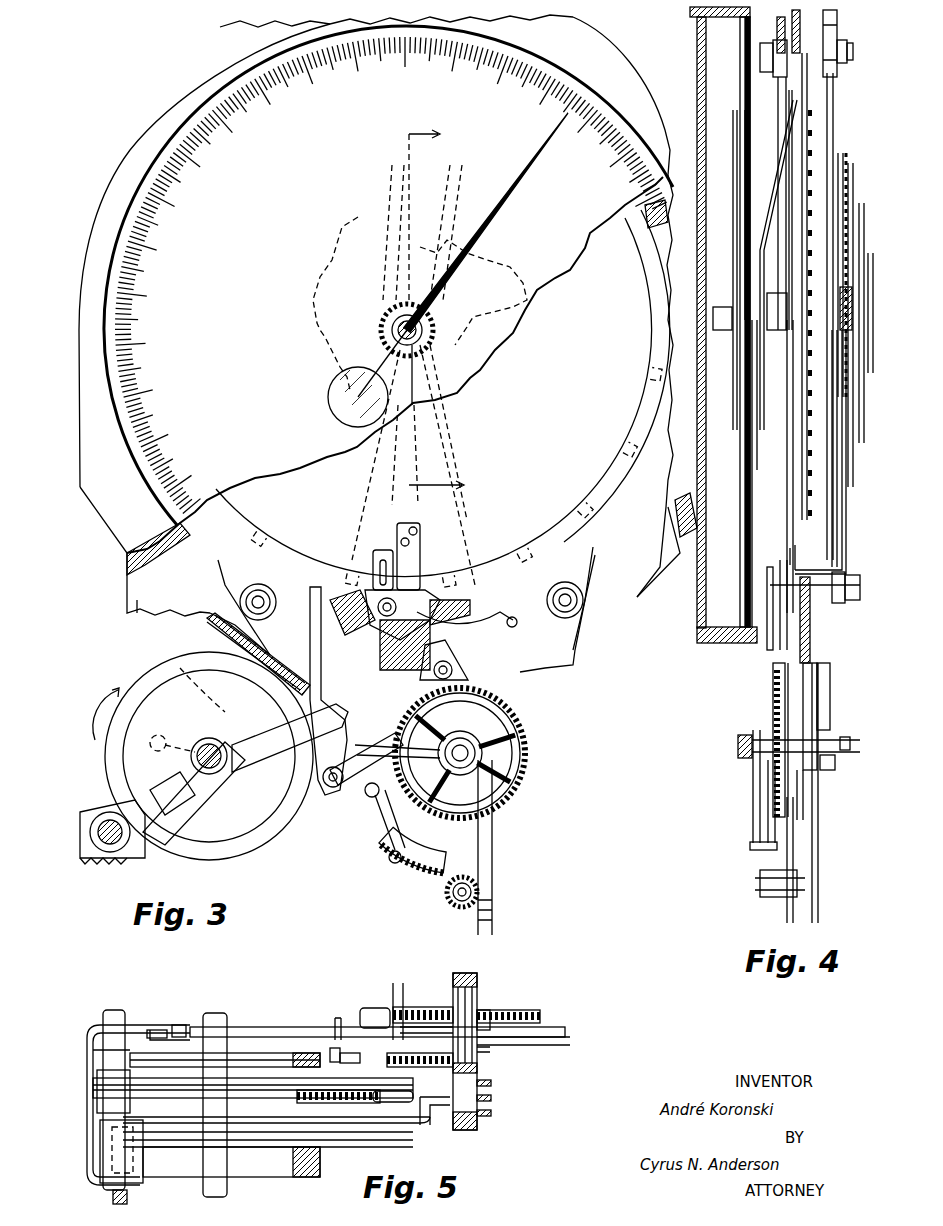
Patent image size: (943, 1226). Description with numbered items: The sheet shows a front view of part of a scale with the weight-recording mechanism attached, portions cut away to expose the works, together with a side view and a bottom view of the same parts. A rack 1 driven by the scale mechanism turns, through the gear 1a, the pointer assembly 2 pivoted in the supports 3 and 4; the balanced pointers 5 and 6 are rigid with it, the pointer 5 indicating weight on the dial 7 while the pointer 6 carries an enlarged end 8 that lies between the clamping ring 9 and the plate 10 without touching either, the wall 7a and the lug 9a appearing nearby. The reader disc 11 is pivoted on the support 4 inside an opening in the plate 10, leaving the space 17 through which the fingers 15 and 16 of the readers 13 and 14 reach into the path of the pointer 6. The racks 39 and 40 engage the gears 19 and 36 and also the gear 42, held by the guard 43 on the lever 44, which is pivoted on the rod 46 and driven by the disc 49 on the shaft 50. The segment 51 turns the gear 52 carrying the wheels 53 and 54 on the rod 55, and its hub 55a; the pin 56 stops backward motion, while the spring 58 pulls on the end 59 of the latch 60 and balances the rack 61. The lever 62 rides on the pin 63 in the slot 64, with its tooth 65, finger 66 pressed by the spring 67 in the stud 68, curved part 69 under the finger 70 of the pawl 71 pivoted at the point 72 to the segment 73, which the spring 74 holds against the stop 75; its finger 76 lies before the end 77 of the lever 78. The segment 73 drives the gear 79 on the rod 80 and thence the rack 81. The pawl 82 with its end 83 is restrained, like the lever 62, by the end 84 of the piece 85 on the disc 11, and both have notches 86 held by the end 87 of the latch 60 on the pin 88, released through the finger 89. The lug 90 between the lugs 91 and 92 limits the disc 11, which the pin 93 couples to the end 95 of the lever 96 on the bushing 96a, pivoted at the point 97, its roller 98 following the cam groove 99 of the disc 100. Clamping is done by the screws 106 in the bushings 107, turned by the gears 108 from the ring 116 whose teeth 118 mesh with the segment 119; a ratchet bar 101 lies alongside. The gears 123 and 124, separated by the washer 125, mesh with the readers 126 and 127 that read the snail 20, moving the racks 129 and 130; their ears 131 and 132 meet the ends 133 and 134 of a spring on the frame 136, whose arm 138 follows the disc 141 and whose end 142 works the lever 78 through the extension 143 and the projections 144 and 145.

In FIG. 4, the rack 1 is at (755, 465).
In FIG. 4, the gear 1a is at (745, 302).
In FIG. 4, the pointer assembly 2 is at (736, 310).
In FIG. 3, the support 3 is at (395, 325).
In FIG. 4, the support 3 is at (715, 352).
In FIG. 4, the support 4 is at (773, 305).
In FIG. 3, the pointer 5 is at (506, 205).
In FIG. 4, the pointer 5 is at (733, 135).
In FIG. 4, the pointer 6 is at (780, 185).
In FIG. 3, the dial 7 is at (535, 275).
In FIG. 4, the dial 7 is at (750, 500).
In FIG. 4, the housing wall 7a is at (700, 60).
In FIG. 3, the enlarged end 8 is at (578, 97).
In FIG. 4, the enlarged end 8 is at (750, 717).
In FIG. 3, the clamping ring 9 is at (618, 560).
In FIG. 4, the clamping ring 9 is at (788, 115).
In FIG. 3, the ring lug 9a is at (537, 643).
In FIG. 3, the plate 10 is at (137, 593).
In FIG. 4, the plate 10 is at (777, 22).
In FIG. 5, the plate 10 is at (570, 1041).
In FIG. 3, the reader disc 11 is at (603, 474).
In FIG. 4, the reader disc 11 is at (803, 150).
In FIG. 3, the reader 13 is at (468, 545).
In FIG. 4, the reader 13 is at (840, 528).
In FIG. 3, the reader 14 is at (310, 540).
In FIG. 4, the reader 14 is at (830, 511).
In FIG. 3, the finger 15 is at (492, 598).
In FIG. 3, the finger 16 is at (300, 573).
In FIG. 3, the space 17 is at (612, 470).
In FIG. 4, the gear 19 is at (843, 305).
In FIG. 3, the snail 20 is at (318, 188).
In FIG. 4, the snail 20 is at (860, 200).
In FIG. 4, the gear 36 is at (843, 280).
In FIG. 3, the rack 39 is at (452, 175).
In FIG. 4, the rack 39 is at (850, 187).
In FIG. 5, the rack 39 is at (402, 1100).
In FIG. 3, the rack 40 is at (395, 180).
In FIG. 4, the rack 40 is at (840, 165).
In FIG. 5, the rack 40 is at (295, 1095).
In FIG. 5, the gear 42 is at (343, 1100).
In FIG. 5, the guard 43 is at (395, 1103).
In FIG. 5, the lever 44 is at (180, 1091).
In FIG. 3, the rod 46 is at (110, 852).
In FIG. 5, the rod 46 is at (110, 1012).
In FIG. 5, the disc 49 is at (240, 1150).
In FIG. 3, the shaft 50 is at (222, 765).
In FIG. 5, the shaft 50 is at (213, 1013).
In FIG. 3, the segment 51 is at (530, 722).
In FIG. 4, the segment 51 is at (830, 723).
In FIG. 5, the segment 51 is at (480, 1060).
In FIG. 4, the gear 52 is at (830, 735).
In FIG. 5, the gear 52 is at (487, 1053).
In FIG. 3, the wheel 53 is at (528, 768).
In FIG. 4, the wheel 53 is at (803, 797).
In FIG. 5, the wheel 53 is at (560, 1037).
In FIG. 3, the wheel 54 is at (525, 753).
In FIG. 4, the wheel 54 is at (775, 808).
In FIG. 5, the wheel 54 is at (532, 1013).
In FIG. 3, the rod 55 is at (515, 768).
In FIG. 4, the rod 55 is at (850, 745).
In FIG. 3, the shaft 55a is at (504, 947).
In FIG. 4, the shaft 55a is at (738, 740).
In FIG. 5, the shaft 55a is at (477, 978).
In FIG. 4, the pin 56 is at (817, 697).
In FIG. 5, the pin 56 is at (428, 1066).
In FIG. 3, the spring 58 is at (522, 740).
In FIG. 5, the spring 58 is at (525, 1010).
In FIG. 3, the end 59 is at (510, 712).
In FIG. 4, the end 59 is at (776, 686).
In FIG. 3, the latch 60 is at (463, 678).
In FIG. 4, the latch 60 is at (782, 655).
In FIG. 5, the latch 60 is at (425, 1027).
In FIG. 3, the rack 61 is at (492, 933).
In FIG. 4, the rack 61 is at (818, 897).
In FIG. 5, the rack 61 is at (490, 1049).
In FIG. 3, the lever 62 is at (378, 537).
In FIG. 4, the lever 62 is at (740, 613).
In FIG. 5, the lever 62 is at (345, 1033).
In FIG. 3, the pin 63 is at (330, 578).
In FIG. 4, the pin 63 is at (775, 590).
In FIG. 3, the slot 64 is at (385, 562).
In FIG. 3, the pawl point or tooth 65 is at (370, 733).
In FIG. 3, the finger 66 is at (448, 598).
In FIG. 3, the spring 67 is at (480, 622).
In FIG. 3, the stud 68 is at (510, 633).
In FIG. 5, the stud 68 is at (565, 1030).
In FIG. 3, the curved part 69 is at (399, 808).
In FIG. 3, the laterally extending finger 70 is at (337, 788).
In FIG. 5, the laterally extending finger 70 is at (360, 1025).
In FIG. 3, the pawl 71 is at (370, 787).
In FIG. 5, the pawl 71 is at (375, 1008).
In FIG. 3, the point 72 is at (372, 797).
In FIG. 3, the segment 73 is at (432, 868).
In FIG. 4, the segment 73 is at (768, 795).
In FIG. 5, the segment 73 is at (425, 1008).
In FIG. 3, the spring 74 is at (386, 798).
In FIG. 4, the spring 74 is at (752, 772).
In FIG. 5, the spring 74 is at (368, 1010).
In FIG. 3, the stop 75 is at (397, 865).
In FIG. 4, the stop 75 is at (752, 847).
In FIG. 5, the stop 75 is at (397, 990).
In FIG. 3, the laterally projecting finger 76 is at (357, 730).
In FIG. 5, the laterally projecting finger 76 is at (335, 1018).
In FIG. 3, the end 77 is at (235, 745).
In FIG. 3, the lever 78 is at (212, 738).
In FIG. 5, the lever 78 is at (286, 1027).
In FIG. 3, the gear 79 is at (458, 905).
In FIG. 4, the gear 79 is at (778, 885).
In FIG. 5, the gear 79 is at (480, 990).
In FIG. 3, the rod 80 is at (476, 890).
In FIG. 4, the rod 80 is at (760, 883).
In FIG. 5, the rod 80 is at (482, 1000).
In FIG. 3, the rack 81 is at (492, 913).
In FIG. 4, the rack 81 is at (790, 913).
In FIG. 5, the rack 81 is at (492, 1013).
In FIG. 3, the pawl 82 is at (360, 650).
In FIG. 4, the pawl 82 is at (778, 612).
In FIG. 3, the end 83 is at (490, 700).
In FIG. 3, the end 84 is at (350, 640).
In FIG. 4, the end 84 is at (773, 640).
In FIG. 3, the piece 85 is at (415, 570).
In FIG. 4, the piece 85 is at (790, 558).
In FIG. 3, the notches 86 is at (400, 667).
In FIG. 3, the end 87 is at (393, 680).
In FIG. 5, the end 87 is at (392, 983).
In FIG. 3, the pin 88 is at (452, 670).
In FIG. 3, the finger 89 is at (437, 660).
In FIG. 4, the finger 89 is at (780, 648).
In FIG. 3, the lug 90 is at (385, 545).
In FIG. 3, the lug 91 is at (340, 558).
In FIG. 3, the lug 92 is at (412, 585).
In FIG. 3, the pin 93 is at (372, 570).
In FIG. 5, the pin 93 is at (345, 1050).
In FIG. 3, the end 95 is at (350, 575).
In FIG. 3, the lever 96 is at (273, 752).
In FIG. 5, the lever 96 is at (265, 1053).
In FIG. 4, the bushing 96a is at (835, 763).
In FIG. 5, the bushing 96a is at (355, 1063).
In FIG. 3, the point 97 is at (325, 780).
In FIG. 3, the roller 98 is at (207, 687).
In FIG. 3, the cam groove 99 is at (205, 850).
In FIG. 3, the disc 100 is at (146, 682).
In FIG. 5, the disc 100 is at (232, 1053).
In FIG. 4, the ratchet bar 101 is at (807, 118).
In FIG. 3, the screws 106 is at (592, 602).
In FIG. 4, the screws 106 is at (796, 45).
In FIG. 4, the bushings 107 is at (762, 58).
In FIG. 4, the gears 108 is at (837, 45).
In FIG. 3, the ring 116 is at (681, 497).
In FIG. 4, the ring 116 is at (833, 103).
In FIG. 3, the teeth 118 is at (210, 622).
In FIG. 3, the segment 119 is at (212, 630).
In FIG. 5, the segment 119 is at (288, 1078).
In FIG. 5, the gear 123 is at (491, 1084).
In FIG. 5, the gear 124 is at (491, 1113).
In FIG. 5, the washer 125 is at (491, 1098).
In FIG. 5, the reader 126 is at (470, 1130).
In FIG. 5, the reader 127 is at (460, 1130).
In FIG. 5, the rack 129 is at (491, 1086).
In FIG. 5, the rack 130 is at (491, 1106).
In FIG. 5, the ear 131 is at (443, 1125).
In FIG. 5, the ear 132 is at (425, 1125).
In FIG. 5, the end 133 is at (333, 1120).
In FIG. 5, the end 134 is at (325, 1130).
In FIG. 3, the frame 136 is at (112, 827).
In FIG. 5, the frame 136 is at (127, 1050).
In FIG. 5, the arm 138 is at (170, 1177).
In FIG. 5, the disc 141 is at (237, 1177).
In FIG. 3, the end 142 is at (140, 822).
In FIG. 3, the extension 143 is at (160, 812).
In FIG. 5, the extension 143 is at (162, 1028).
In FIG. 3, the projection 144 is at (163, 735).
In FIG. 5, the projection 144 is at (155, 1030).
In FIG. 3, the projection 145 is at (185, 805).
In FIG. 5, the projection 145 is at (177, 1027).